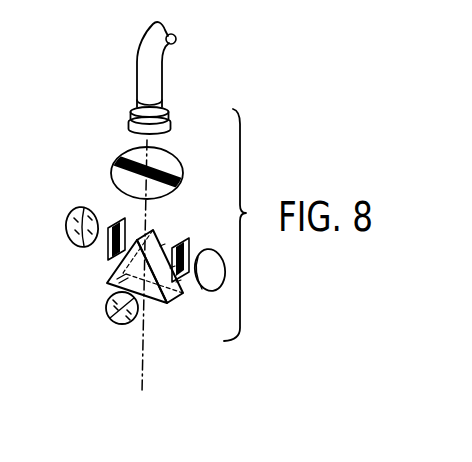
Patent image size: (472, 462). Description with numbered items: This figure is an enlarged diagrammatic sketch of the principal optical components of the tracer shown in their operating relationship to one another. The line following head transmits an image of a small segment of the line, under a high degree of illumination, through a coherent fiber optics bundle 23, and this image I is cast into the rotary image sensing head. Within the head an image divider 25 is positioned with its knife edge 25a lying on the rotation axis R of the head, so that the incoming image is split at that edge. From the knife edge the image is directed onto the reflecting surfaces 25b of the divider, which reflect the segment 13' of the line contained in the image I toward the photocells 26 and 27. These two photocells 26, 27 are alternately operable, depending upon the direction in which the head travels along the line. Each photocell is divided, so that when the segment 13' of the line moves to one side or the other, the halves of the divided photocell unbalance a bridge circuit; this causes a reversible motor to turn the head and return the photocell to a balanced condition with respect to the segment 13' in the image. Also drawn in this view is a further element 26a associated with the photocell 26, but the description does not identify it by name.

The coherent fiber optics bundle 23 is at (155, 85).
The segment of the line 13' is at (138, 165).
The image I is at (178, 160).
The image divider 25 is at (108, 273).
The knife edge 25a is at (140, 238).
The reflecting surfaces 25b is at (118, 256).
The photocell 27 is at (65, 225).
The photocell 26 is at (210, 289).
The lens 26a is at (110, 323).
The rotation axis R is at (138, 385).